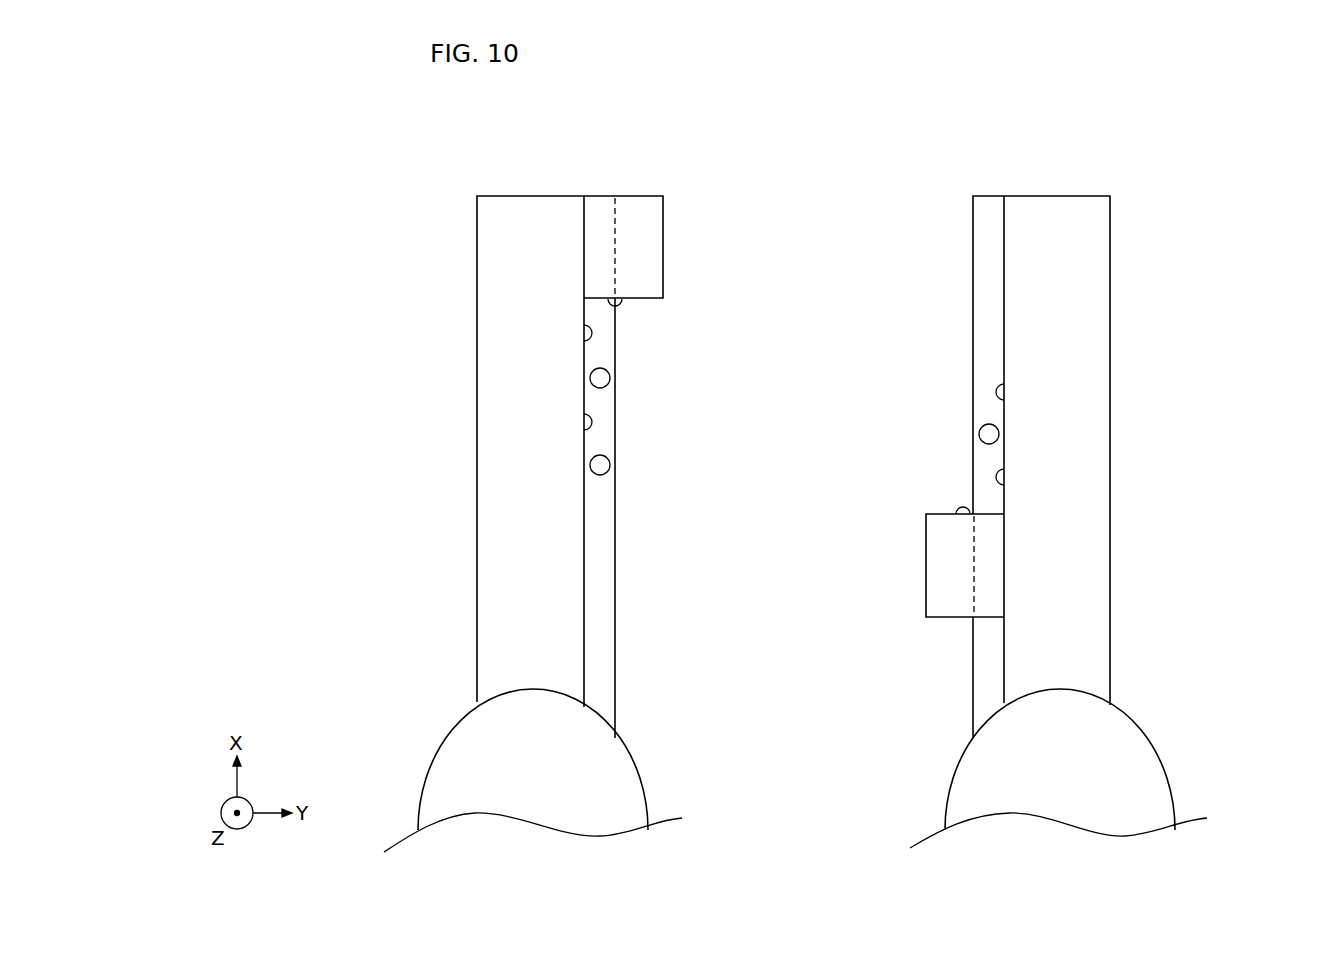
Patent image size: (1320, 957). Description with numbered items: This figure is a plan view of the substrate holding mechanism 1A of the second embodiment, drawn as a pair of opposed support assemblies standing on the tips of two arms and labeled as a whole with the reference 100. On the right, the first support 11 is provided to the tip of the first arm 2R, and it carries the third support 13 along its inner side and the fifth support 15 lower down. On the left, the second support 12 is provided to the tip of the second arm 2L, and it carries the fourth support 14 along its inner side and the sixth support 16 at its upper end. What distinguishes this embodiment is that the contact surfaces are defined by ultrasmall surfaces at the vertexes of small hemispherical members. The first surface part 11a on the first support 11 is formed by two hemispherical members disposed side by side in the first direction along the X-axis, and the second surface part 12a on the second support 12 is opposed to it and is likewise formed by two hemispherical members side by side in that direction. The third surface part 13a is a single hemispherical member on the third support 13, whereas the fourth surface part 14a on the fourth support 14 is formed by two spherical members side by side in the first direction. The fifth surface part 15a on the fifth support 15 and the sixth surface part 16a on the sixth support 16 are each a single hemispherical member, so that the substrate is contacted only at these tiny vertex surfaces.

The substrate holding mechanism 1A is at (813, 160).
The electronic device assembly 100 is at (817, 890).
The first support 11 is at (1090, 255).
The first surface part 11a is at (997, 390).
The second support 12 is at (493, 353).
The second surface part 12a is at (605, 333).
The third support 13 is at (993, 243).
The third surface part 13a is at (984, 428).
The fourth support 14 is at (603, 542).
The fourth surface part 14a is at (613, 380).
The fifth support 15 is at (945, 553).
The fifth surface part 15a is at (962, 508).
The sixth support 16 is at (645, 244).
The sixth surface part 16a is at (627, 305).
The second arm 2L is at (643, 792).
The first arm 2R is at (1171, 792).